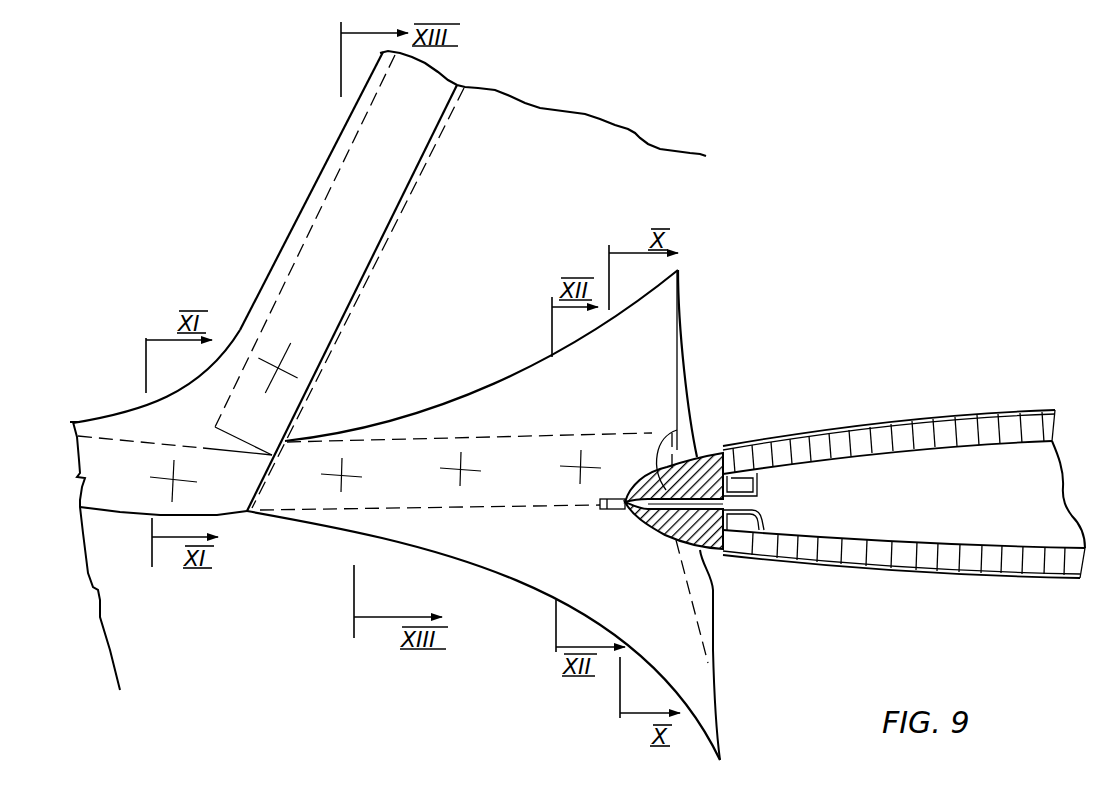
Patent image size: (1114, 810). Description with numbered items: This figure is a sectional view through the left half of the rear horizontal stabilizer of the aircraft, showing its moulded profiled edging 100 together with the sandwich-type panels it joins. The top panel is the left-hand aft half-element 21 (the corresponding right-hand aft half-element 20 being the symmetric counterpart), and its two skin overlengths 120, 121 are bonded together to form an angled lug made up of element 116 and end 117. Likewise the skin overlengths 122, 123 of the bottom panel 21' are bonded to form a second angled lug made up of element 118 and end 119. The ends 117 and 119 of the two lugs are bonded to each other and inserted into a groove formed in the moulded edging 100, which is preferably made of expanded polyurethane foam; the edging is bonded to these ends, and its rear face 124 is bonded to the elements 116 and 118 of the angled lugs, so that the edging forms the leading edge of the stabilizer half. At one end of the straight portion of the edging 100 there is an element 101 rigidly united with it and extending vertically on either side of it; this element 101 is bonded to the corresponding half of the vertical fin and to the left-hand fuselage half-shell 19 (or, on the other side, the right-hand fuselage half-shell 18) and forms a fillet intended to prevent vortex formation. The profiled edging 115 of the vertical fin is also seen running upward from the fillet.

The fillet element 101 is at (515, 412).
The profiled edging for the vertical fin 115 is at (318, 194).
The left-hand fuselage half-shell 19 is at (76, 556).
The right-hand fuselage half-shell 18 is at (98, 583).
The moulded edging 100 is at (684, 449).
The end of angled lug of bottom panel 119 is at (671, 512).
The end of angled lug of top panel 117 is at (668, 438).
The rear face of moulded edging 124 is at (714, 578).
The angled lug element of top panel 116 is at (742, 490).
The angled lug element of bottom panel 118 is at (762, 528).
The left-hand aft half-element 21 is at (889, 444).
The right-hand aft half-element 20 is at (889, 444).
The skin overlength of top panel 120 is at (915, 422).
The skin overlength of top panel 121 is at (900, 453).
The bottom panel 21' is at (904, 566).
The skin overlength of bottom panel 122 is at (923, 543).
The skin overlength of bottom panel 123 is at (880, 575).